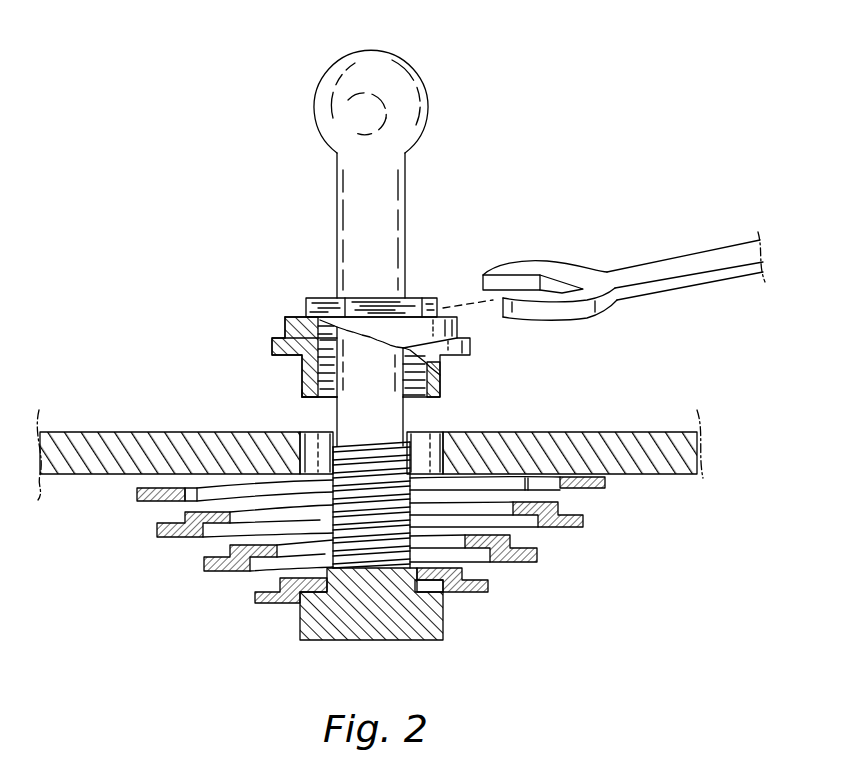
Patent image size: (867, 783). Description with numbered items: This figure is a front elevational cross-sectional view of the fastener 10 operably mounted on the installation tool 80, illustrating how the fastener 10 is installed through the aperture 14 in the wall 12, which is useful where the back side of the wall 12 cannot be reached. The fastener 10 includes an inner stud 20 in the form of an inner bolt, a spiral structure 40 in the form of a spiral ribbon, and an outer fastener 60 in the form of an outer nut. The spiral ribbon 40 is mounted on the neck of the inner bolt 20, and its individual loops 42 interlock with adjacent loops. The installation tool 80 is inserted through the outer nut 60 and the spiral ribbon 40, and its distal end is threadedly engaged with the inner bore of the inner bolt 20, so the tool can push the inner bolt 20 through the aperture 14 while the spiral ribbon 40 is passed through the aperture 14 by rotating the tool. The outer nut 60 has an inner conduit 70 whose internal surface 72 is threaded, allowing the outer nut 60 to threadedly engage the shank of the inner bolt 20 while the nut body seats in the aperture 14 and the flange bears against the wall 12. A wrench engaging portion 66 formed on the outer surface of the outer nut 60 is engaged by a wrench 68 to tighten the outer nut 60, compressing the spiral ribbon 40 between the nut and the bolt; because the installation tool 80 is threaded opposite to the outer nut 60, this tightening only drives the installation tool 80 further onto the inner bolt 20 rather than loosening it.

The fastener 10 is at (238, 266).
The wall 12 is at (610, 440).
The aperture 14 is at (428, 431).
The inner stud 20 is at (443, 625).
The spiral structure 40 is at (510, 559).
The loop 42 is at (607, 485).
The outer fastener 60 is at (394, 357).
The wrench engaging portion 66 is at (434, 299).
The wrench 68 is at (653, 270).
The inner conduit 70 is at (332, 393).
The internal surface 72 is at (371, 360).
The installation tool 80 is at (398, 186).